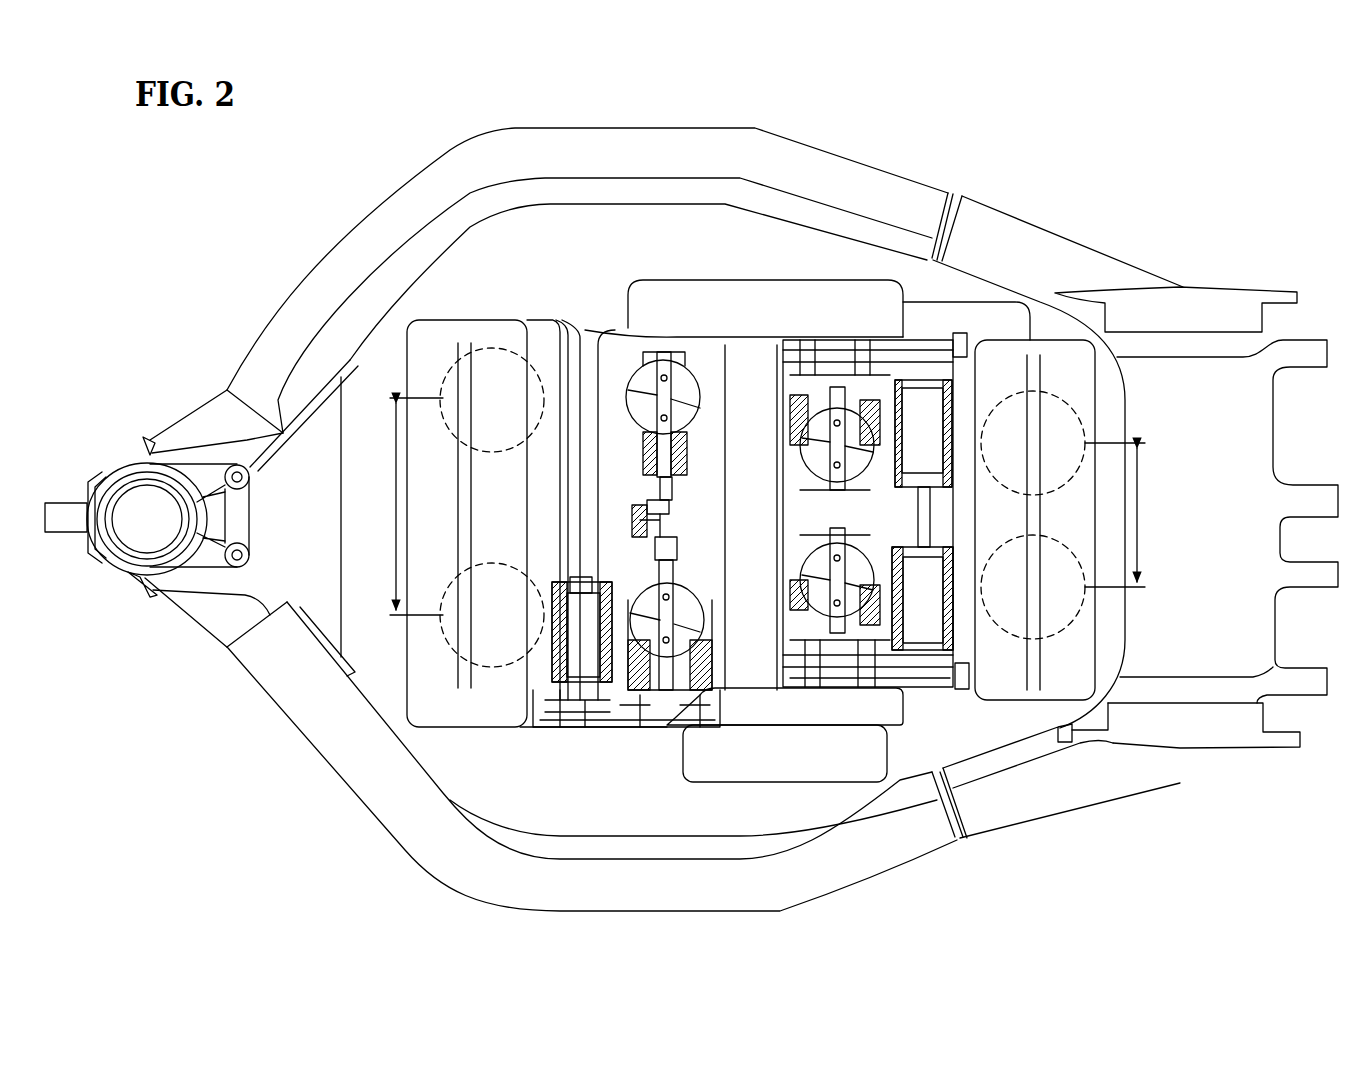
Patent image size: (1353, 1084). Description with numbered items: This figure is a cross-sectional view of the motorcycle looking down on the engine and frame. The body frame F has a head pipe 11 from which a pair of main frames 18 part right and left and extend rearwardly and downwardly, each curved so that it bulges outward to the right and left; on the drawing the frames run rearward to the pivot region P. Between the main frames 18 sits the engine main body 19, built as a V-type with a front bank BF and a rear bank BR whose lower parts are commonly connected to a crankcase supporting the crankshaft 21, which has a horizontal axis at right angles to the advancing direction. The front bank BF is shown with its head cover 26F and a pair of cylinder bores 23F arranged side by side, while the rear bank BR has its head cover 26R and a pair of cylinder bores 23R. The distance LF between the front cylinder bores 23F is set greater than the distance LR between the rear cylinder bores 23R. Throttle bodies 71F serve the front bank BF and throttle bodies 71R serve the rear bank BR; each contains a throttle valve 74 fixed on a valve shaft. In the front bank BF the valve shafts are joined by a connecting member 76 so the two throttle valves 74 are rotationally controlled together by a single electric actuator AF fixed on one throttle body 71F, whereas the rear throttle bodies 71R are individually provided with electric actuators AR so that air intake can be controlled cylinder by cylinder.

The head pipe 11 is at (140, 455).
The main frame 18 is at (360, 243).
The engine main body 19 is at (683, 492).
The crankshaft 21 is at (752, 370).
The cylinder bore 23F is at (450, 368).
The cylinder bore 23R is at (1092, 398).
The head cover 26F is at (422, 335).
The head cover 26R is at (1063, 687).
The throttle body 71F is at (628, 365).
The throttle body 71R is at (800, 412).
The throttle valve 74 is at (647, 410).
The connecting member 76 is at (633, 508).
The electric actuator AF is at (543, 660).
The electric actuator AR is at (957, 406).
The front bank BF is at (497, 318).
The rear bank BR is at (1057, 330).
The distance between cylinder bores LF is at (400, 506).
The distance between cylinder bores LR is at (1130, 515).
The pivot frame P is at (988, 293).
The body frame F is at (556, 524).